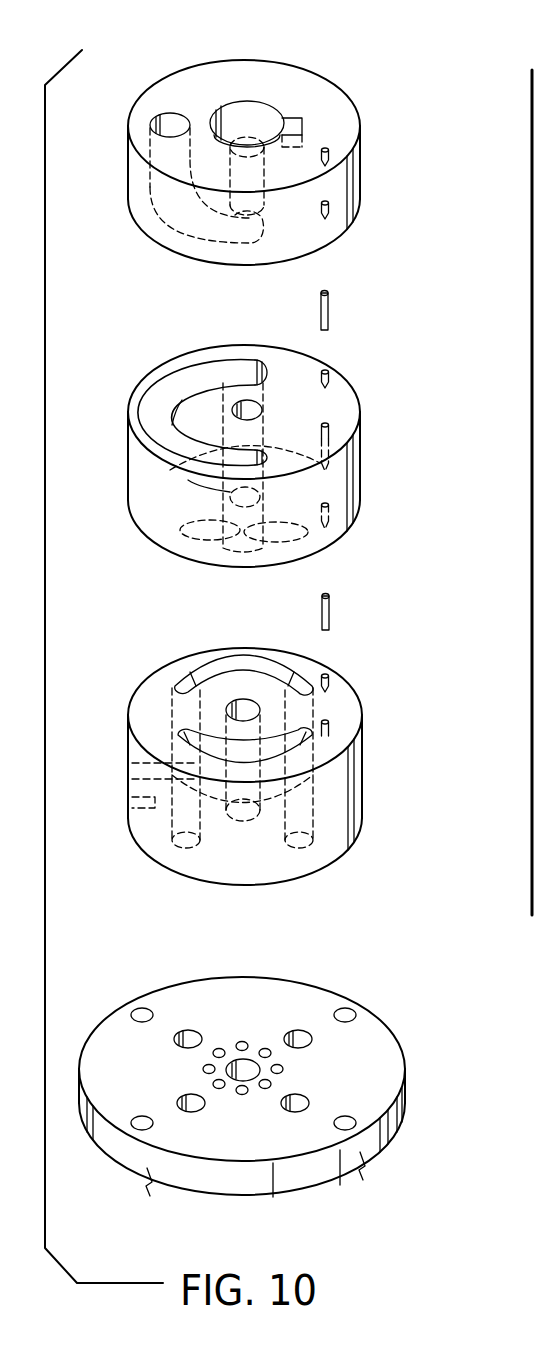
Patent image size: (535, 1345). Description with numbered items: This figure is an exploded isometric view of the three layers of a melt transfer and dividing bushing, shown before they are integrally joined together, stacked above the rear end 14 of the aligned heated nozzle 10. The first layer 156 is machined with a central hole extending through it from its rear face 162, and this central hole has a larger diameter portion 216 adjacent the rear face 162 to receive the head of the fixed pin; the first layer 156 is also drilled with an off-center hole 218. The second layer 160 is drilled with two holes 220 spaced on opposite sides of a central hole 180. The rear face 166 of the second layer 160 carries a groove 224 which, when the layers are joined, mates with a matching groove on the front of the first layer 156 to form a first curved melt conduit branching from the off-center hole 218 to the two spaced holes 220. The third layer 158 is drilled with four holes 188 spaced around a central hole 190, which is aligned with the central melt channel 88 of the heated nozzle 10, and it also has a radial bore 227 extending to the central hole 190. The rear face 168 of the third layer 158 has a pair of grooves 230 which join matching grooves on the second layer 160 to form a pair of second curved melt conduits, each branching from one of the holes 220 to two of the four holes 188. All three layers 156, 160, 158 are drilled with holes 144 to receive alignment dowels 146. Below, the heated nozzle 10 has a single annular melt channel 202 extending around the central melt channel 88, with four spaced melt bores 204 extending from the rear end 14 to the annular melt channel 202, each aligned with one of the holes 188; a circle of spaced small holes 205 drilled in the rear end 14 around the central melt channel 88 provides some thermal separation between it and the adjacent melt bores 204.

The heated nozzle 10 is at (272, 1064).
The rear end 14 is at (375, 1065).
The central melt channel 88 is at (247, 1067).
The holes 144 is at (335, 217).
The alignment dowels 146 is at (331, 306).
The first layer 156 is at (278, 142).
The third layer 158 is at (248, 743).
The second layer 160 is at (271, 437).
The rear face 162 is at (313, 92).
The rear face 166 is at (333, 410).
The rear face 168 is at (153, 705).
The central hole 180 is at (250, 408).
The holes 188 is at (298, 826).
The central hole 190 is at (250, 700).
The annular melt channel 202 is at (188, 1035).
The melt bores 204 is at (301, 1034).
The small holes 205 is at (279, 1070).
The larger diameter portion 216 is at (246, 116).
The off-center hole 218 is at (170, 120).
The holes 220 is at (250, 365).
The groove 224 is at (190, 378).
The radial bore 227 is at (132, 773).
The grooves 230 is at (270, 668).